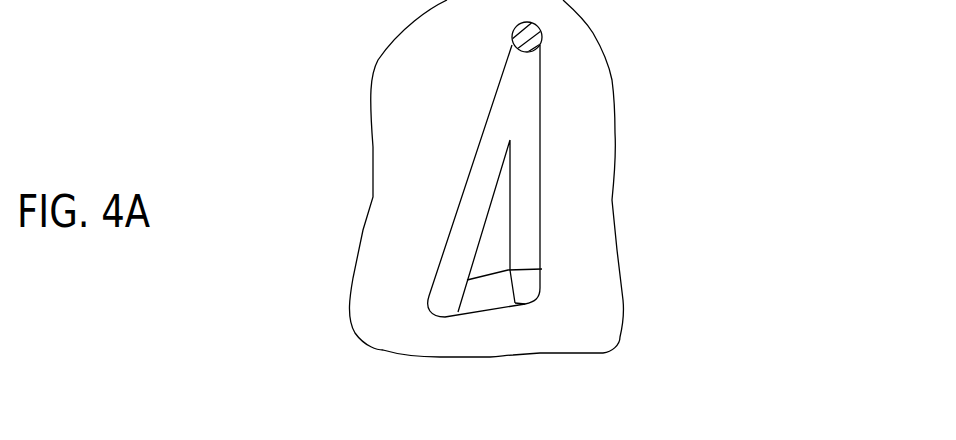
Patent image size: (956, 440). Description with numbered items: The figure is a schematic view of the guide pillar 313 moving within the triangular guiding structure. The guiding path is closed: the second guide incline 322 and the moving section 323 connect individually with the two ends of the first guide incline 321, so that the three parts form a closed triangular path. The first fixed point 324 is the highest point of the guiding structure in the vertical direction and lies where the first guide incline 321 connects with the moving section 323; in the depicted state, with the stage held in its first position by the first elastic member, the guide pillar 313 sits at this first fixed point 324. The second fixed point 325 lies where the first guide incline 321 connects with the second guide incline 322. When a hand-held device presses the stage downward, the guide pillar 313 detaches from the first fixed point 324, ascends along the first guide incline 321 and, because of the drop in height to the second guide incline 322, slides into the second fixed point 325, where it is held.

The guide pillar 313 is at (541, 45).
The first guide incline 321 is at (518, 173).
The second guide incline 322 is at (480, 292).
The moving section 323 is at (480, 197).
The first fixed point 324 is at (537, 25).
The second fixed point 325 is at (528, 285).